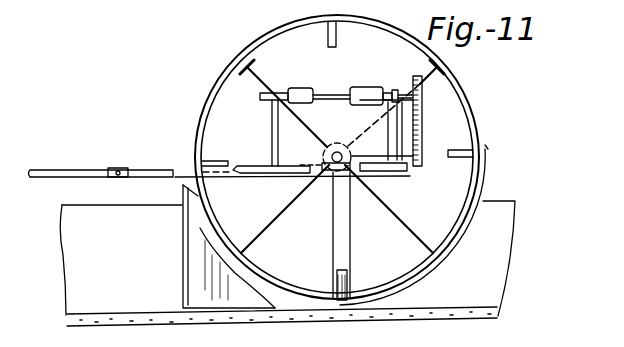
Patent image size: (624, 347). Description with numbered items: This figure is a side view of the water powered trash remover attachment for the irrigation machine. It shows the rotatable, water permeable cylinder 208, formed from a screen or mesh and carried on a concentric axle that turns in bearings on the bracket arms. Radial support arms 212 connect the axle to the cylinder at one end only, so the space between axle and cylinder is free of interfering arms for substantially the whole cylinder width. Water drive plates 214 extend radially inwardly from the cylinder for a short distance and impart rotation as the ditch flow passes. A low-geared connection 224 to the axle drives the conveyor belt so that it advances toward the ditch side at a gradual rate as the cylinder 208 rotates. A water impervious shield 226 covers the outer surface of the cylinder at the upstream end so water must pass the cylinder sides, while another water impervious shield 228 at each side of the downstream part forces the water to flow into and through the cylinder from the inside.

The water permeable cylinder 208 is at (371, 23).
The radial support arms 212 is at (276, 82).
The water drive plates 214 is at (457, 150).
The low-geared connection 224 is at (417, 167).
The water impervious shield 226 is at (492, 178).
The water impervious shield 228 is at (185, 270).